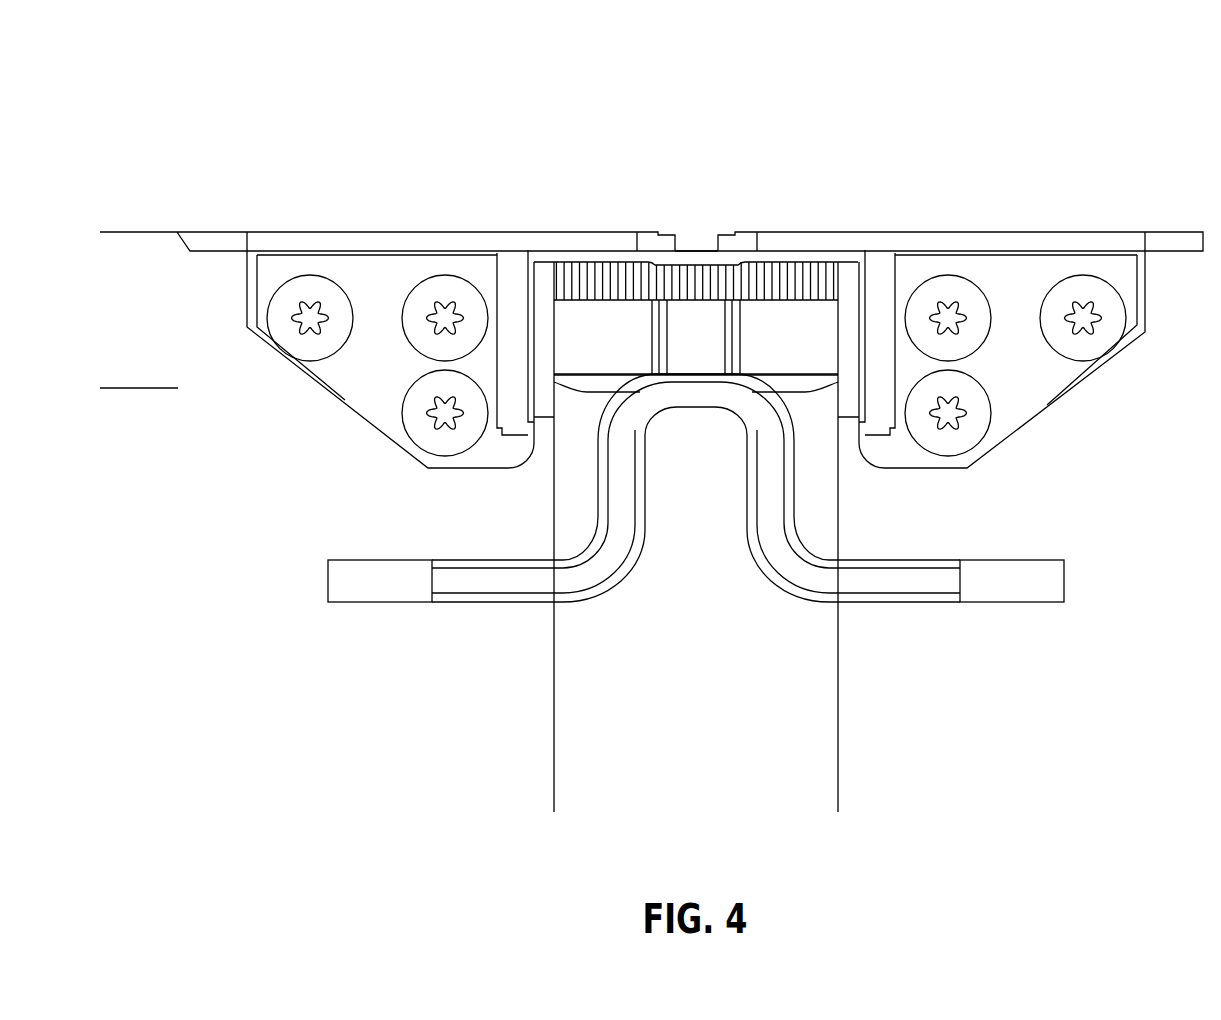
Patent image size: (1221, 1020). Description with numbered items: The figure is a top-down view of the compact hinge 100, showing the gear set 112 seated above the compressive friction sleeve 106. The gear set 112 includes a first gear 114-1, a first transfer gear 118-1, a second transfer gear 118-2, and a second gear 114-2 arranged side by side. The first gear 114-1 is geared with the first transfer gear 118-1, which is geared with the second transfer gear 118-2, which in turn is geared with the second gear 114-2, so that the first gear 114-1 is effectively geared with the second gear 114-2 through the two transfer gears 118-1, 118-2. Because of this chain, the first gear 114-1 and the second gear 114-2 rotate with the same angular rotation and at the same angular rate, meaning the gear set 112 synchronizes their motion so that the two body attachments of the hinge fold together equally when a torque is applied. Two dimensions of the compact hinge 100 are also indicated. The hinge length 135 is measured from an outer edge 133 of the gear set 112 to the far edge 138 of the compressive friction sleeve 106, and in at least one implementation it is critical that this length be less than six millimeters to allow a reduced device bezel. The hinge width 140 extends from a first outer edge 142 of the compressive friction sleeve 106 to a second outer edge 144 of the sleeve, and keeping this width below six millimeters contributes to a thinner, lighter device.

The compact hinge 100 is at (749, 108).
The compressive friction sleeve 106 is at (546, 297).
The gear set 112 is at (698, 249).
The first gear 114-1 is at (577, 263).
The second gear 114-2 is at (822, 263).
The first transfer gear 118-1 is at (657, 263).
The second transfer gear 118-2 is at (737, 263).
The outer edge 133 is at (549, 247).
The hinge length 135 is at (140, 233).
The far edge 138 is at (580, 394).
The hinge width 140 is at (555, 808).
The first outer edge 142 is at (568, 322).
The second outer edge 144 is at (843, 344).